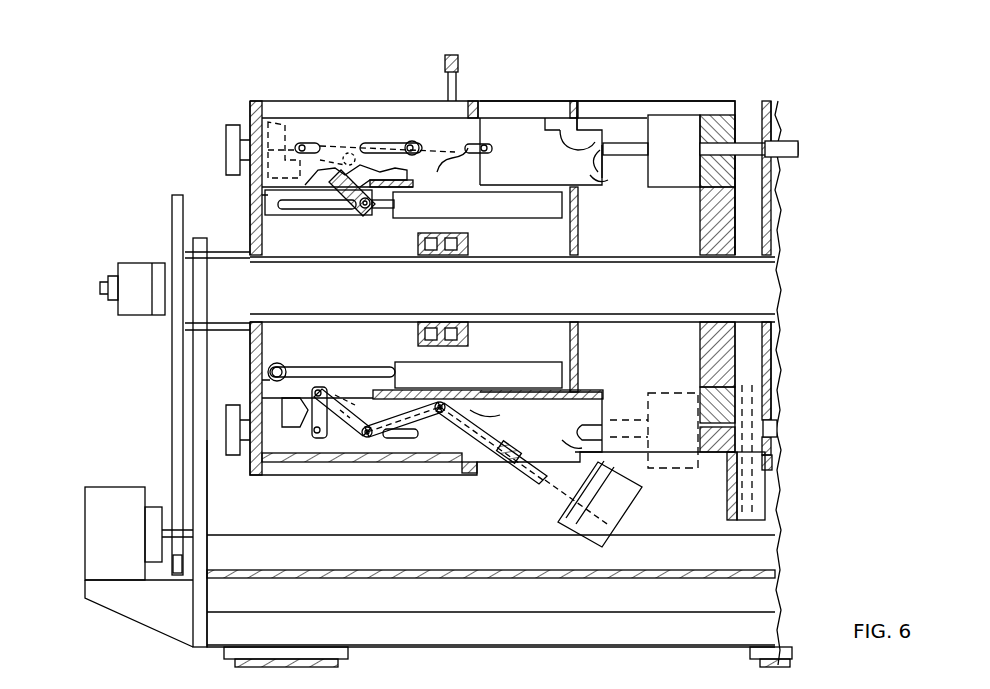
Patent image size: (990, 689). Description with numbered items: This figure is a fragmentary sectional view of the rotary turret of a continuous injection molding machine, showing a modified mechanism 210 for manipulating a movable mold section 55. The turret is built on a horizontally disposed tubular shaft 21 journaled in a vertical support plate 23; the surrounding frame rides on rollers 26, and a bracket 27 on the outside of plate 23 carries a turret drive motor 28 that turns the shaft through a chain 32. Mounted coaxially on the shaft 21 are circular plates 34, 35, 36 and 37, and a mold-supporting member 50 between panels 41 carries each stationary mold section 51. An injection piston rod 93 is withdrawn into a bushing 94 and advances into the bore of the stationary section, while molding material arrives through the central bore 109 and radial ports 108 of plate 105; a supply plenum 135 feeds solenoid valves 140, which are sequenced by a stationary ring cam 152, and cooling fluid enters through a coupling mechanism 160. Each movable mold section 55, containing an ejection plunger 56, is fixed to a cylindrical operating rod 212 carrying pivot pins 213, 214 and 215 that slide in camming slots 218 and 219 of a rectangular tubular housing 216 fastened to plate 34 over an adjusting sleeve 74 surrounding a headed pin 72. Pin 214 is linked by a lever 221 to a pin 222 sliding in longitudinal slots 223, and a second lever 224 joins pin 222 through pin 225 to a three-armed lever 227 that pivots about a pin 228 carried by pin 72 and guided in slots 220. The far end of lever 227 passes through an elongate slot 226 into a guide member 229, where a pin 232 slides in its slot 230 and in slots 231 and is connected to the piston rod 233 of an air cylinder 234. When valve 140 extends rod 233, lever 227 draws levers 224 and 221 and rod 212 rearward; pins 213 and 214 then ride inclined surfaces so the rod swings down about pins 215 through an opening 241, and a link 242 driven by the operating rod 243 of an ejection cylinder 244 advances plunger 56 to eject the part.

The tubular shaft 21 is at (778, 292).
The support plate 23 is at (193, 398).
The rollers 26 is at (348, 658).
The bracket 27 is at (130, 615).
The turret drive motor 28 is at (139, 533).
The chain 32 is at (172, 375).
The circular plate 34 is at (250, 107).
The circular plate 35 is at (478, 110).
The circular plate 36 is at (580, 115).
The circular plate 37 is at (772, 115).
The panels 41 is at (672, 100).
The mold-supporting member 50 is at (705, 215).
The stationary mold section 51 is at (712, 115).
The movable mold section 55 is at (681, 472).
The plunger 56 is at (624, 514).
The headed pin 72 is at (298, 128).
The externally-threaded sleeve 74 is at (226, 135).
The piston rod 93 is at (742, 143).
The bushing 94 is at (771, 157).
The plate 105 is at (765, 515).
The radial ports 108 is at (775, 462).
The central bore 109 is at (771, 400).
The supply plenum 135 is at (420, 250).
The solenoid valve 140 is at (472, 116).
The ring cam 152 is at (451, 55).
The coupling mechanism 160 is at (118, 322).
The modified mechanism 210 is at (521, 113).
The operating rod 212 is at (625, 143).
The pivot pin 213 is at (602, 170).
The pivot pin 214 is at (480, 144).
The pivot pin 215 is at (500, 140).
The tubular housing 216 is at (390, 118).
The camming slot 218 is at (590, 160).
The camming slot 219 is at (470, 165).
The guide slot 220 is at (300, 143).
The lever 221 is at (418, 420).
The pin 222 is at (408, 141).
The longitudinal slot 223 is at (414, 141).
The lever 224 is at (345, 415).
The pin 225 is at (325, 390).
The elongate slot 226 is at (375, 143).
The three-armed lever 227 is at (322, 160).
The pin 228 is at (298, 143).
The guide member 229 is at (265, 195).
The slot 230 is at (310, 205).
The slot 231 is at (265, 212).
The pin 232 is at (360, 207).
The piston rod 233 is at (380, 208).
The air cylinder 234 is at (477, 289).
The slot 241 is at (490, 458).
The link 242 is at (565, 515).
The operating rod 243 is at (562, 128).
The ejection cylinder 244 is at (482, 452).